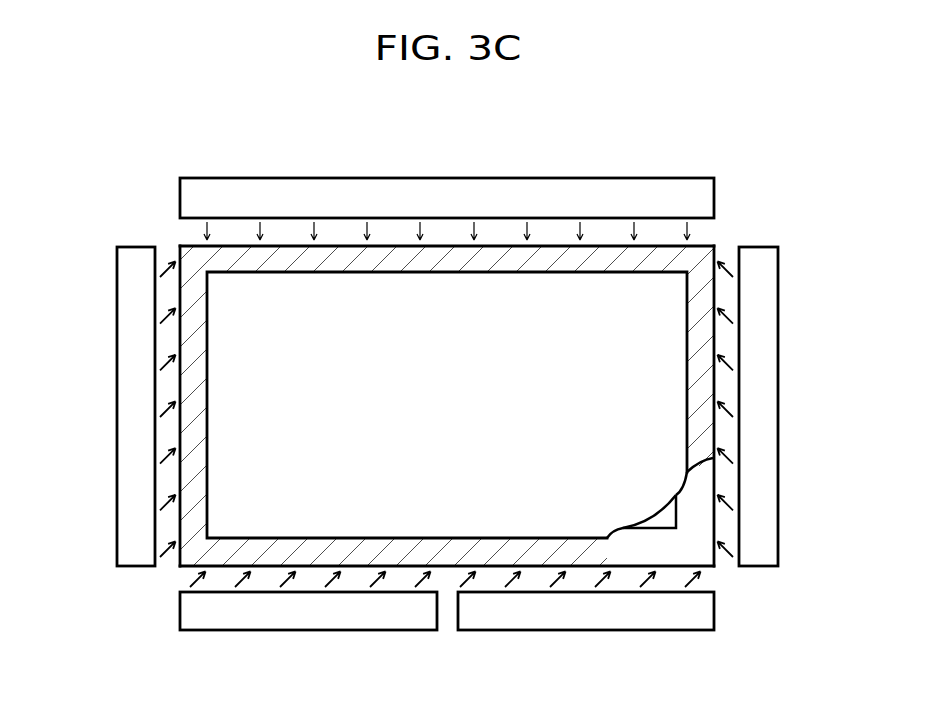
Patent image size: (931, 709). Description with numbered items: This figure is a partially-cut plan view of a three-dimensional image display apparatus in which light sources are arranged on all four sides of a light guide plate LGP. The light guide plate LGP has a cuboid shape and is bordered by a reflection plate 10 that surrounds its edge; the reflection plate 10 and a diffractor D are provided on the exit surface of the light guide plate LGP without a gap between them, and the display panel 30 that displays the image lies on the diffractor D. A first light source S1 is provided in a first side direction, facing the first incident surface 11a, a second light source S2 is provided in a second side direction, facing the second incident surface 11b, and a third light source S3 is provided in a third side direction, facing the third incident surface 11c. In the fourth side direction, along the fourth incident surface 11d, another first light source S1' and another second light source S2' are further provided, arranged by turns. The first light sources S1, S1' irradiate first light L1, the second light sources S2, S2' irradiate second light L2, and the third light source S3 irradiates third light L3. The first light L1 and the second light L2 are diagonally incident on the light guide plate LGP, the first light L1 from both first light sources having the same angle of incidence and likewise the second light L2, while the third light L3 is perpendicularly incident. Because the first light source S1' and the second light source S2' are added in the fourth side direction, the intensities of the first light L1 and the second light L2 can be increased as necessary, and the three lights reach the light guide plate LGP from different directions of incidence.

The reflection plate 10 is at (405, 548).
The light guide plate LGP is at (667, 542).
The first incident surface 11a is at (180, 503).
The second incident surface 11b is at (718, 496).
The third incident surface 11c is at (538, 248).
The fourth incident surface 11d is at (647, 563).
The display panel 30 is at (500, 508).
The diffractor D is at (663, 518).
The first light source S1 is at (96, 406).
The second light source S2 is at (796, 406).
The third light source S3 is at (448, 183).
The another first light source S1' is at (308, 645).
The another second light source S2' is at (586, 645).
The first light L1 is at (190, 587).
The second light L2 is at (685, 590).
The third light L3 is at (207, 238).